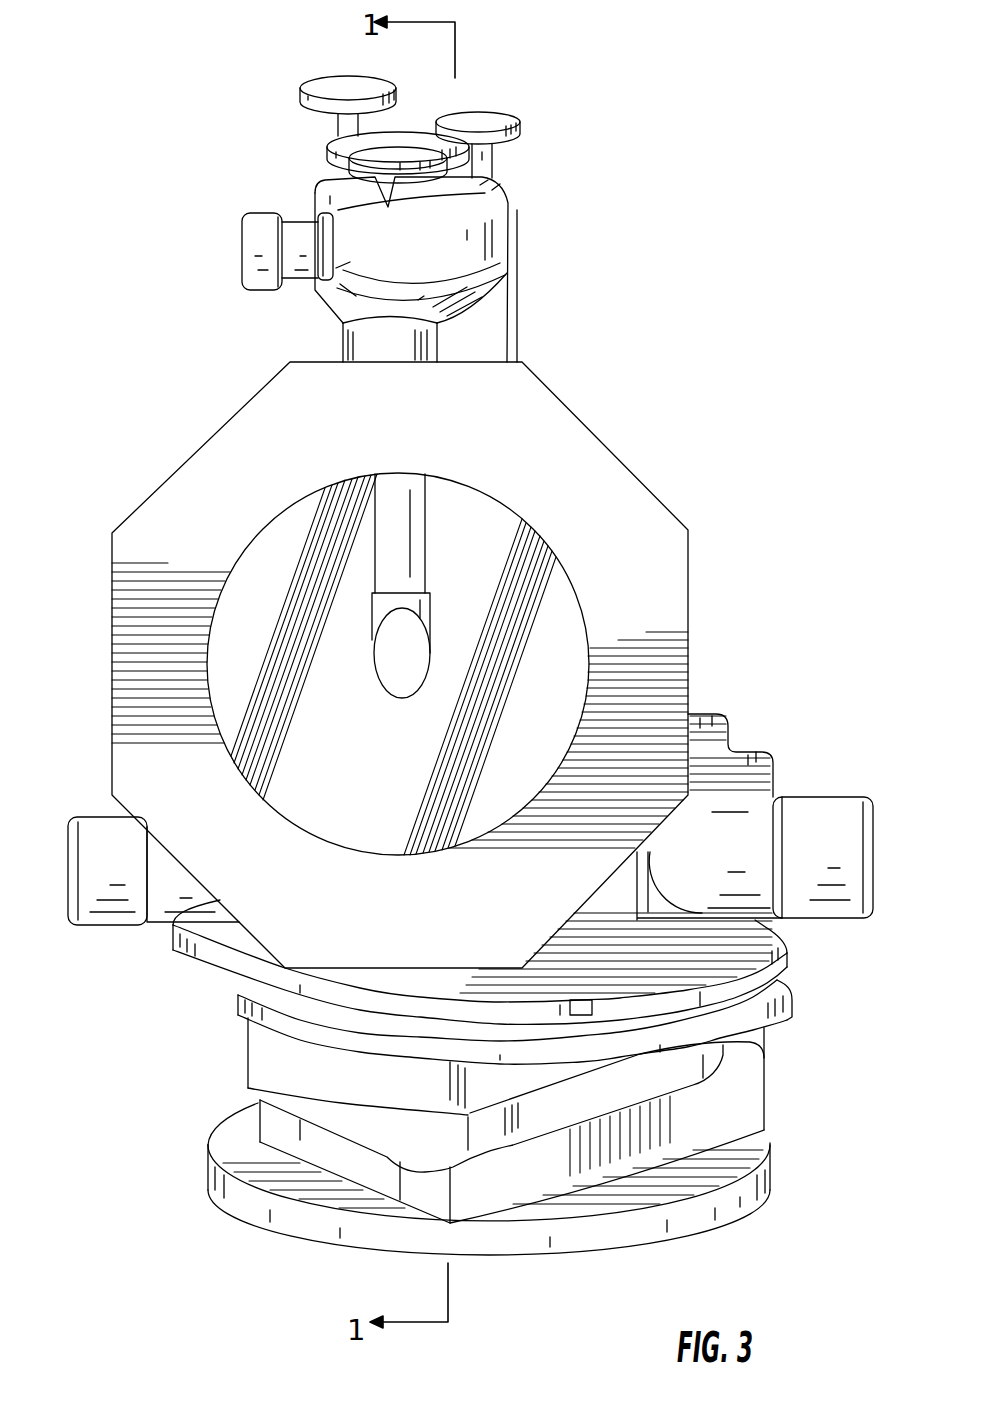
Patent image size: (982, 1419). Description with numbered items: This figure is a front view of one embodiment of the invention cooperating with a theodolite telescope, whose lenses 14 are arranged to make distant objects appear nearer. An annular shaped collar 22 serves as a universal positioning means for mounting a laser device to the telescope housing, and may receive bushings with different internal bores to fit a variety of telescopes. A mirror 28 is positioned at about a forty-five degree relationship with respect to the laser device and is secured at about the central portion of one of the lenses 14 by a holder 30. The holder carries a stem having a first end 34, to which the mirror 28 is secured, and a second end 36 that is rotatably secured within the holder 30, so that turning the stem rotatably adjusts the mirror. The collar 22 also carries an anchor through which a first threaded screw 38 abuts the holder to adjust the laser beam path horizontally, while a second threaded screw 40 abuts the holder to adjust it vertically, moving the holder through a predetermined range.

The lenses and/or prisms 14 is at (280, 563).
The annular shaped collar 22 is at (503, 428).
The mirror 28 is at (415, 658).
The holder 30 is at (410, 530).
The first end 34 is at (420, 602).
The second end 36 is at (405, 128).
The first threaded screw 38 is at (302, 97).
The second threaded screw 40 is at (478, 113).